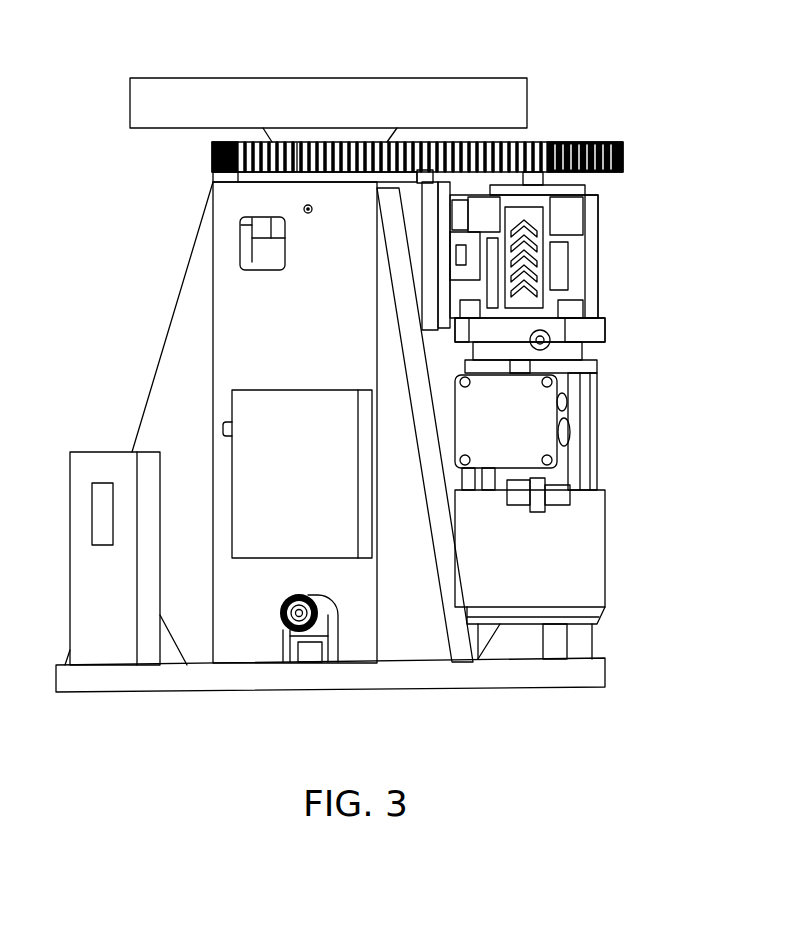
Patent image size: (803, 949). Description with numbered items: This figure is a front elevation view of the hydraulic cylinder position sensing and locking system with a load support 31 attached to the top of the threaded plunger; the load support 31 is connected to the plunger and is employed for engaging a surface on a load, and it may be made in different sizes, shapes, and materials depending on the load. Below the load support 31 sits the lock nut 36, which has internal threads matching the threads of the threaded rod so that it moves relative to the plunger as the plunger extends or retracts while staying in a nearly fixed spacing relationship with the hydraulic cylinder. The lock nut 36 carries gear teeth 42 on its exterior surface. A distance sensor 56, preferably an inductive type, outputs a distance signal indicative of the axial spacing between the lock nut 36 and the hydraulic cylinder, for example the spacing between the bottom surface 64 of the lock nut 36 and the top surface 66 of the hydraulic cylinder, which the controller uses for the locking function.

The load support 31 is at (152, 100).
The lock nut 36 is at (212, 160).
The gear teeth 42 is at (213, 171).
The bottom surface 64 is at (236, 175).
The top surface 66 is at (300, 172).
The distance sensor 56 is at (265, 243).